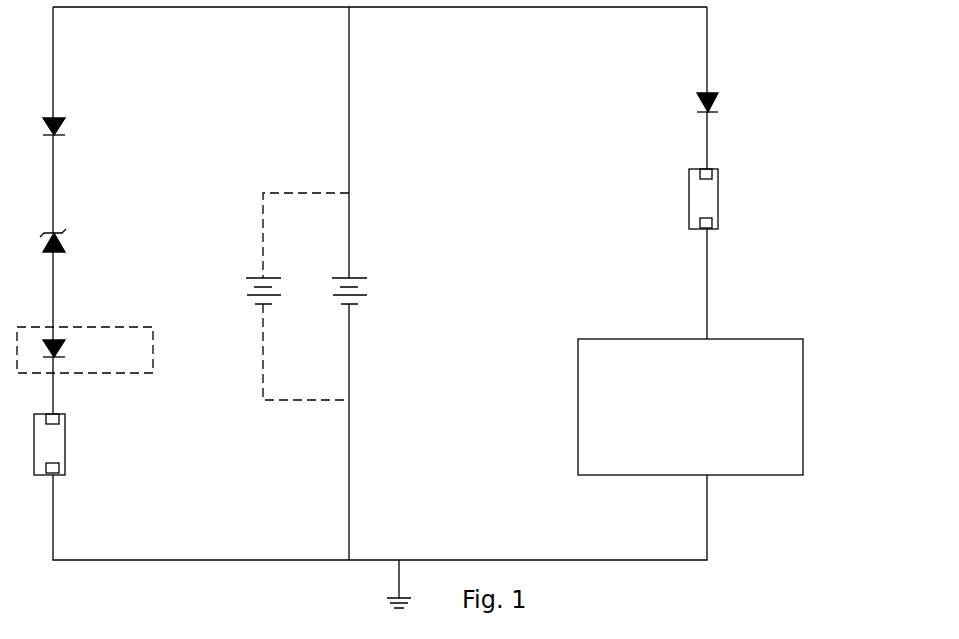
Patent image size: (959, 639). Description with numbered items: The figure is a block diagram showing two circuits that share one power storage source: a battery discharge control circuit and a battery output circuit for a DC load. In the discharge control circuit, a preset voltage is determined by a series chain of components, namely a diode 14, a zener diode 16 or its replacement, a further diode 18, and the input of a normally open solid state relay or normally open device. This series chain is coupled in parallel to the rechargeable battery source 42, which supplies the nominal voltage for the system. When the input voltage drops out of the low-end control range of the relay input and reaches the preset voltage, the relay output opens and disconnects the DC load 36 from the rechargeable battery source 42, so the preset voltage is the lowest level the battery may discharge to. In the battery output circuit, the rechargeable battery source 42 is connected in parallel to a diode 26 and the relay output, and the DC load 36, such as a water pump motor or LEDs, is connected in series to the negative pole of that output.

The diode 14 is at (90, 128).
The zener diode 16 is at (121, 245).
The diode 18 is at (85, 350).
The diode 26 is at (737, 103).
The DC load 36 is at (728, 407).
The rechargeable battery source 42 is at (342, 296).